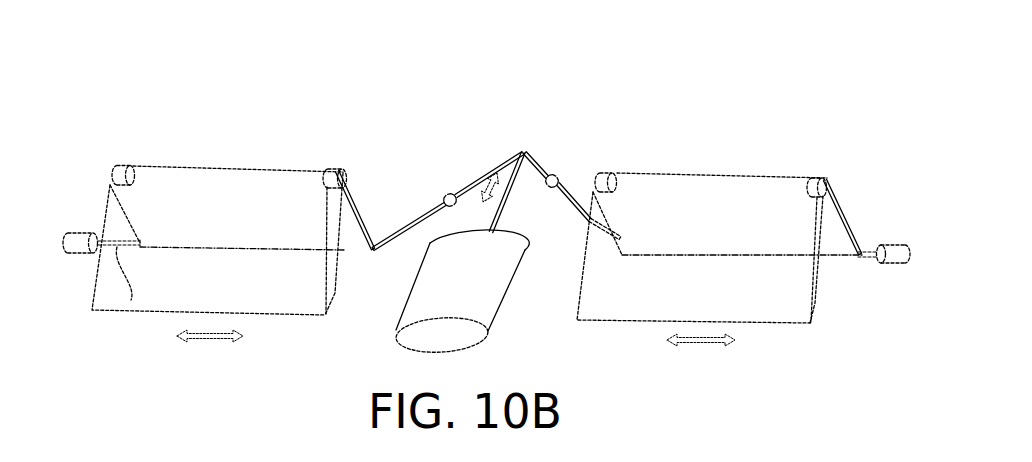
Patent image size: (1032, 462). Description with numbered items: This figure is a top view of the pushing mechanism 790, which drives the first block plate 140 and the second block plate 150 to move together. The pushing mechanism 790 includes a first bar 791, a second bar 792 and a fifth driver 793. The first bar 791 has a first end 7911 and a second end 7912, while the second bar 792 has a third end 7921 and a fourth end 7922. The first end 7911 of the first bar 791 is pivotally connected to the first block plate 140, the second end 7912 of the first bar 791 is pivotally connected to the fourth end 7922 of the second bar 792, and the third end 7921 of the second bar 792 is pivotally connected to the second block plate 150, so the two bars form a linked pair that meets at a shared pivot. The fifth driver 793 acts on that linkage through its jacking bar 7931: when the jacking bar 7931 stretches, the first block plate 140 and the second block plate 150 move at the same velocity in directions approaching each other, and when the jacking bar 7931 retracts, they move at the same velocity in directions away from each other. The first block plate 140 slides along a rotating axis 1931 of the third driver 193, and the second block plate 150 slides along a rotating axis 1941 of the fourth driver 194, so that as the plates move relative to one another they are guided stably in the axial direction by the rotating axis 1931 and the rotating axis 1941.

The pushing mechanism 790 is at (397, 51).
The second block plate 150 is at (232, 167).
The fourth driver 194 is at (80, 233).
The rotating axis 1941 is at (131, 300).
The third end 7921 is at (380, 242).
The second bar 792 is at (437, 205).
The fourth end 7922 is at (495, 167).
The jacking bar 7931 is at (502, 218).
The first bar 791 is at (569, 188).
The second end 7912 is at (541, 167).
The first end 7911 is at (617, 238).
The fifth driver 793 is at (495, 290).
The first block plate 140 is at (717, 173).
The rotating axis 1931 is at (870, 260).
The third driver 193 is at (890, 245).